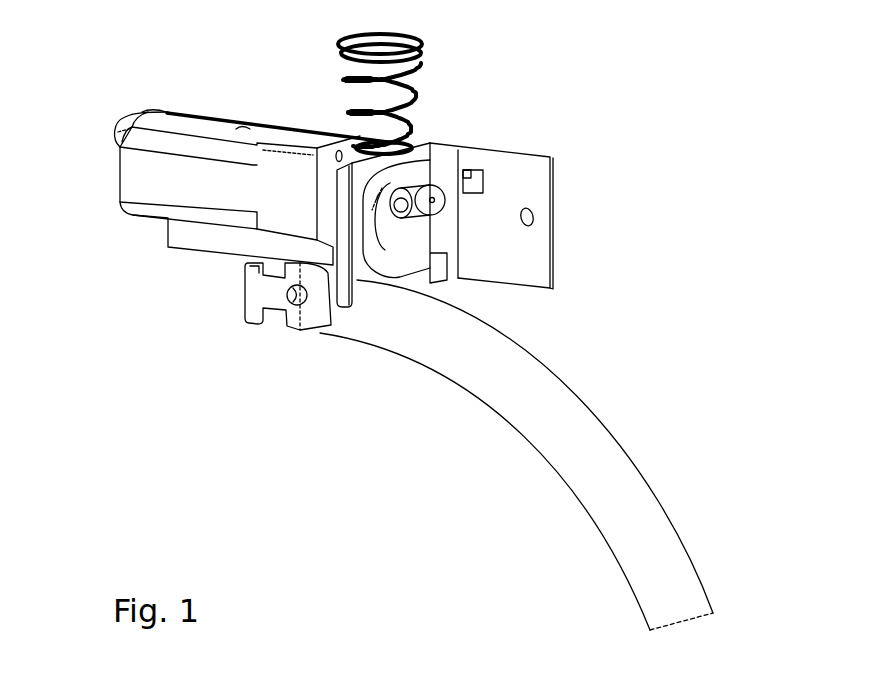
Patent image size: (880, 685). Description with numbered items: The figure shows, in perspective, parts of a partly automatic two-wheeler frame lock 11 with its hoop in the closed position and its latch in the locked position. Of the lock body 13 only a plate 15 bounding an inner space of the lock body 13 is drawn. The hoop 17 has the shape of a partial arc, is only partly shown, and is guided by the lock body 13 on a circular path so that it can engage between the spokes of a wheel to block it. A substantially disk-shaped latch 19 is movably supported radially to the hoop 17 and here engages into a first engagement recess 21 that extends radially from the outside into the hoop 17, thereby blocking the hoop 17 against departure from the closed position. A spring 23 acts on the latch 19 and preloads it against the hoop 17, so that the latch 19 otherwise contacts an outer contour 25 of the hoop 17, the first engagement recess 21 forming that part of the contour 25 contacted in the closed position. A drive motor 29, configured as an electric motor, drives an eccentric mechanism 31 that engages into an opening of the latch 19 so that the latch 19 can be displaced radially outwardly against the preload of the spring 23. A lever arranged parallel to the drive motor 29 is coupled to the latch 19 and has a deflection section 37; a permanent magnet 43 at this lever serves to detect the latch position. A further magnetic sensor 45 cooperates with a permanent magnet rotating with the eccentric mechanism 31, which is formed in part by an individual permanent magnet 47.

The frame lock 11 is at (522, 95).
The lock body 13 is at (270, 120).
The plate 15 is at (534, 164).
The hoop 17 is at (545, 392).
The latch 19 is at (363, 283).
The first engagement recess 21 is at (357, 284).
The spring 23 is at (405, 88).
The outer contour 25 is at (516, 345).
The drive motor 29 is at (167, 185).
The eccentric mechanism 31 is at (377, 223).
The deflection section 37 is at (150, 113).
The permanent magnet 43 is at (116, 133).
The magnetic sensor 45 is at (472, 177).
The individual permanent magnet 47 is at (399, 202).